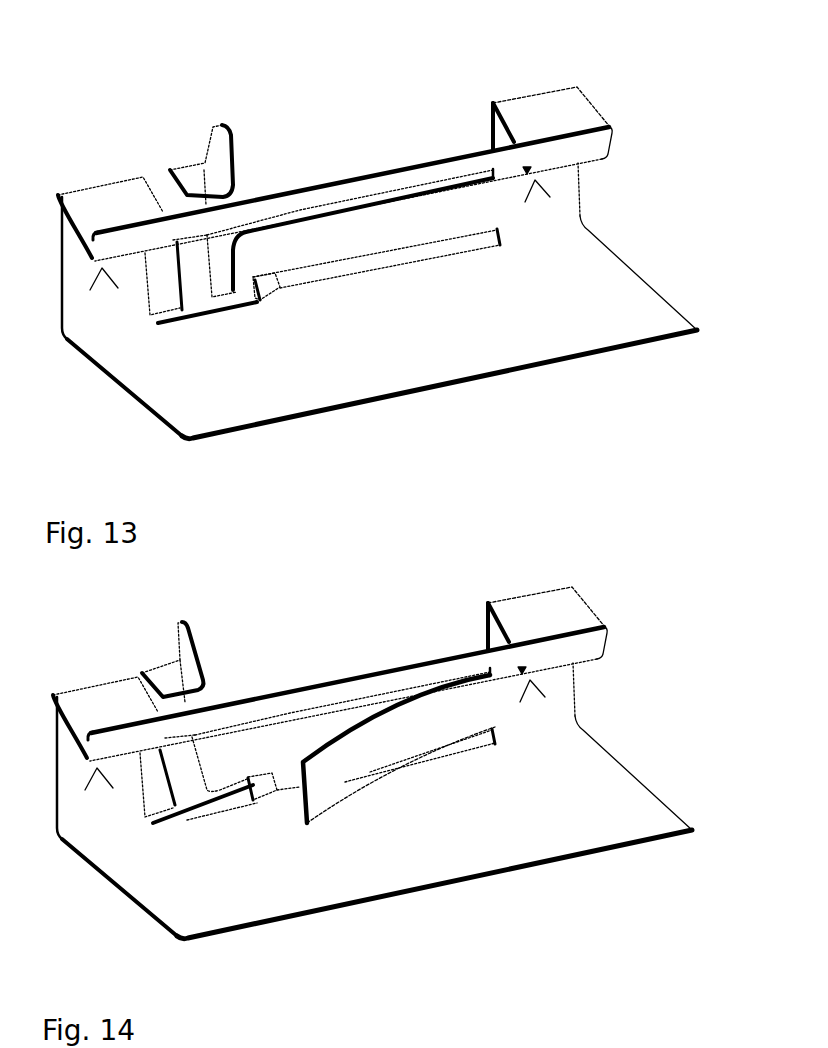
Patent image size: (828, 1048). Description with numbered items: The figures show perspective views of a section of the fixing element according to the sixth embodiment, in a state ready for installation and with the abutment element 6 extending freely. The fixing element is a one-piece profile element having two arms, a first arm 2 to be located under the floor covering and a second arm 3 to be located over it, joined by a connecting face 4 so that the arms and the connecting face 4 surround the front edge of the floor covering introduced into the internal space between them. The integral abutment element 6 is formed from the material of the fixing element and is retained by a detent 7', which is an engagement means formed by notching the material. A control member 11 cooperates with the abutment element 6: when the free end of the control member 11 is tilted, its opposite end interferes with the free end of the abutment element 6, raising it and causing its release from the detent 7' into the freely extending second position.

The first arm 2 is at (567, 312).
The second arm 3 is at (537, 107).
The connecting face 4 is at (555, 218).
The abutment element 6 is at (380, 233).
The detent 7' is at (296, 303).
The control member 11 is at (203, 183).